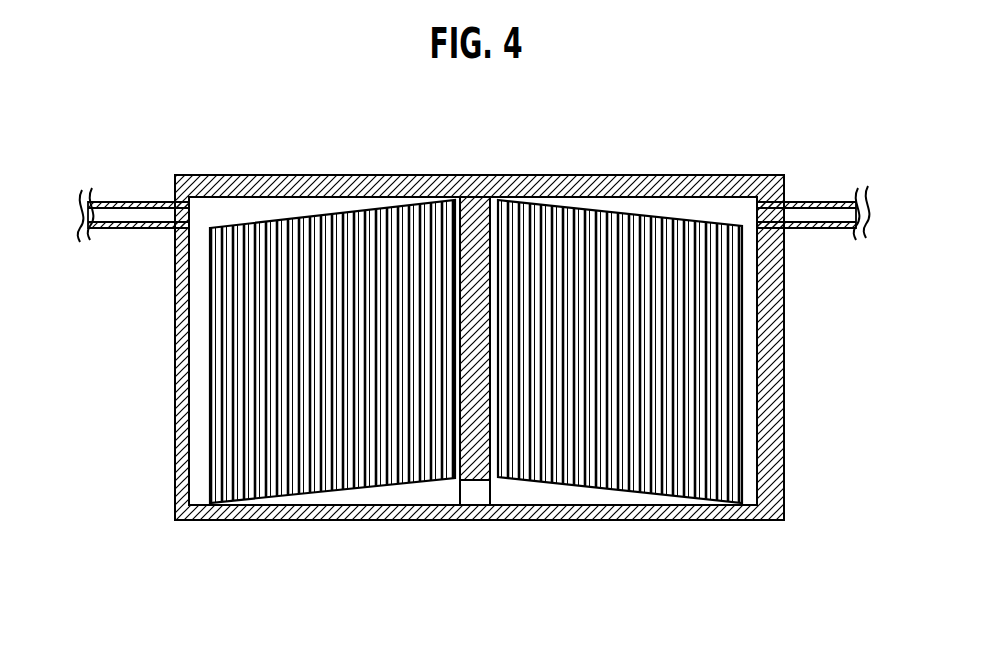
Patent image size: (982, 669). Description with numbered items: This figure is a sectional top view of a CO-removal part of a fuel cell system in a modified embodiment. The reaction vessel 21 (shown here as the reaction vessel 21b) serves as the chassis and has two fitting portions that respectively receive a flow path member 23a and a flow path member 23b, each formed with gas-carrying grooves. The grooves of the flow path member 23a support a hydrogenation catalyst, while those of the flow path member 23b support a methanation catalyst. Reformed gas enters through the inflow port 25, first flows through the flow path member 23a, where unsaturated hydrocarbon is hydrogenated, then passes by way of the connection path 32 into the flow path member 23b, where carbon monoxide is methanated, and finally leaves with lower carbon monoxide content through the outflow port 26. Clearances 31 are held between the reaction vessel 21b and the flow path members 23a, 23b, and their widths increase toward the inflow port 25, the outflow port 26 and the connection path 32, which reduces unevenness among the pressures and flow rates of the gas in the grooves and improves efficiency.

The reaction vessel 21 is at (702, 177).
The reaction vessel 21b is at (197, 522).
The flow path member 23a is at (315, 521).
The flow path member 23b is at (662, 516).
The inflow port 25 is at (100, 200).
The outflow port 26 is at (826, 229).
The clearance 31 is at (240, 188).
The connection path 32 is at (483, 506).